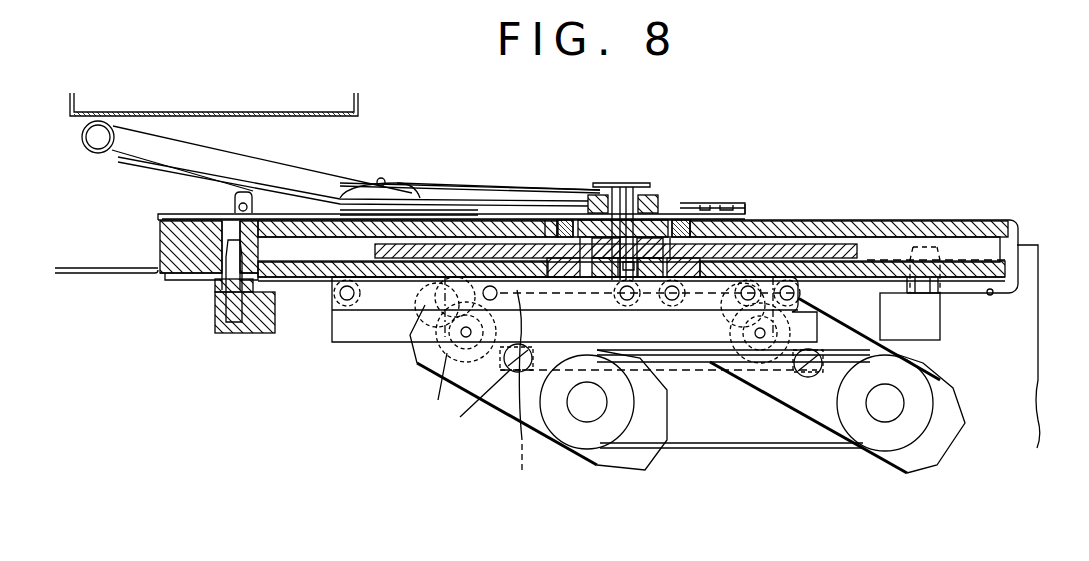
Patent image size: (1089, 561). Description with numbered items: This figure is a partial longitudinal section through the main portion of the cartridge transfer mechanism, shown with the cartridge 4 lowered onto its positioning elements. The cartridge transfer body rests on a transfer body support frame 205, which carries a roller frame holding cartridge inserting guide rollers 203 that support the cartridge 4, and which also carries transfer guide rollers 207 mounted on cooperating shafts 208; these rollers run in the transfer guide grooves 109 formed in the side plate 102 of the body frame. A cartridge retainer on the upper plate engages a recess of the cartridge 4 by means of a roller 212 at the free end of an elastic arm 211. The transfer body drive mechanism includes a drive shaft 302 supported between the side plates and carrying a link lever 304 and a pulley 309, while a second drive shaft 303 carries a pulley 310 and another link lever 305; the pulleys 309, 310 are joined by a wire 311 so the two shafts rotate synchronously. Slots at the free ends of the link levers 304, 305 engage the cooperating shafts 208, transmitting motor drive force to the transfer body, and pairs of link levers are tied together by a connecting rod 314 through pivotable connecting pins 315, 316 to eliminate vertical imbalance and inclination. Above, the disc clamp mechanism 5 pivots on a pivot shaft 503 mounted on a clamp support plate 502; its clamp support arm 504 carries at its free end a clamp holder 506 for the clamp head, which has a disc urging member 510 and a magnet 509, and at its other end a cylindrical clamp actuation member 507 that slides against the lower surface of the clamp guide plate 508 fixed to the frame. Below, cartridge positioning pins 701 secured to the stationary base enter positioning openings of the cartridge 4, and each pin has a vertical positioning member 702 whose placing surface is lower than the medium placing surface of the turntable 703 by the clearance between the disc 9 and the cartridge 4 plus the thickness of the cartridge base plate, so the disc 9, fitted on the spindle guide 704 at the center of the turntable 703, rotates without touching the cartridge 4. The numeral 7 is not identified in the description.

The cartridge 4 is at (862, 221).
The disc clamp mechanism 5 is at (509, 172).
The support block 7 is at (265, 333).
The disc 9 is at (817, 244).
The side plate 102 is at (1032, 371).
The transfer guide groove 109 is at (1005, 307).
The cartridge inserting guide roller 203 is at (800, 298).
The transfer body support frame 205 is at (346, 328).
The transfer guide roller 207 is at (452, 352).
The cooperating shaft 208 is at (472, 356).
The elastic arm 211 is at (283, 197).
The roller 212 is at (236, 205).
The drive shaft 302 is at (895, 400).
The drive shaft 303 is at (600, 405).
The link lever 304 is at (788, 403).
The link lever 305 is at (502, 404).
The pulley 309 is at (893, 443).
The pulley 310 is at (568, 438).
The wire 311 is at (748, 450).
The connecting rod 314 is at (672, 366).
The connecting pin 315 is at (812, 353).
The connecting pin 316 is at (508, 378).
The clamp support plate 502 is at (406, 178).
The pivot shaft 503 is at (381, 177).
The clamp support arm 504 is at (449, 183).
The clamp holder 506 is at (660, 193).
The clamp actuation member 507 is at (88, 146).
The clamp guide plate 508 is at (280, 112).
The magnet 509 is at (587, 217).
The disc urging member 510 is at (563, 197).
The cartridge positioning pin 701 is at (230, 262).
The vertical positioning member 702 is at (255, 284).
The turntable 703 is at (558, 278).
The spindle guide 704 is at (598, 278).